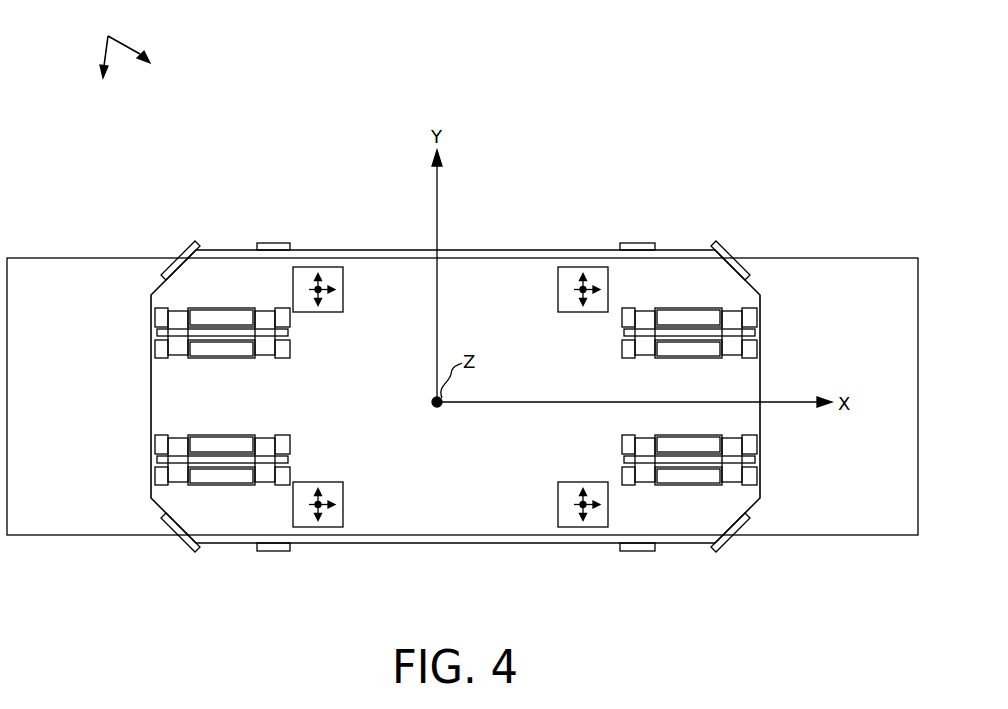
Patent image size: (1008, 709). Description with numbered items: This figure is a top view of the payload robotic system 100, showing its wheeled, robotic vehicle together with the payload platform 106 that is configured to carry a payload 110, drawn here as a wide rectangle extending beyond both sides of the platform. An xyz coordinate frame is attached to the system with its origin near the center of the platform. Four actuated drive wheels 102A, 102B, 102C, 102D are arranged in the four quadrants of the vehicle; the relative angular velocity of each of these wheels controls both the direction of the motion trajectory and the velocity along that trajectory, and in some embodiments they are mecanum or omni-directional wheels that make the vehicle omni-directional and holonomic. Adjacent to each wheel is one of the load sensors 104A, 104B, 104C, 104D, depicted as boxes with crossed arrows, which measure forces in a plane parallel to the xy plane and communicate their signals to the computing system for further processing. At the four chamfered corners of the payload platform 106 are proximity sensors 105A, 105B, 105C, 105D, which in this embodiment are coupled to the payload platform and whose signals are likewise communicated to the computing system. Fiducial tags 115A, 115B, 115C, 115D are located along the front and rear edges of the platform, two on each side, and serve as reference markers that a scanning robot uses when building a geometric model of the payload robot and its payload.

The payload robotic system 100 is at (120, 46).
The payload 110 is at (58, 291).
The payload platform 106 is at (546, 250).
The actuated drive wheel 102A is at (290, 460).
The actuated drive wheel 102B is at (622, 460).
The actuated drive wheel 102C is at (290, 333).
The actuated drive wheel 102D is at (622, 333).
The load sensor 104A is at (343, 504).
The load sensor 104B is at (558, 504).
The load sensor 104C is at (343, 290).
The load sensor 104D is at (558, 290).
The proximity sensor 105A is at (170, 527).
The proximity sensor 105B is at (742, 527).
The proximity sensor 105C is at (168, 266).
The proximity sensor 105D is at (743, 266).
The fiducial tag 115A is at (274, 552).
The fiducial tag 115B is at (637, 552).
The fiducial tag 115C is at (637, 243).
The fiducial tag 115D is at (273, 243).